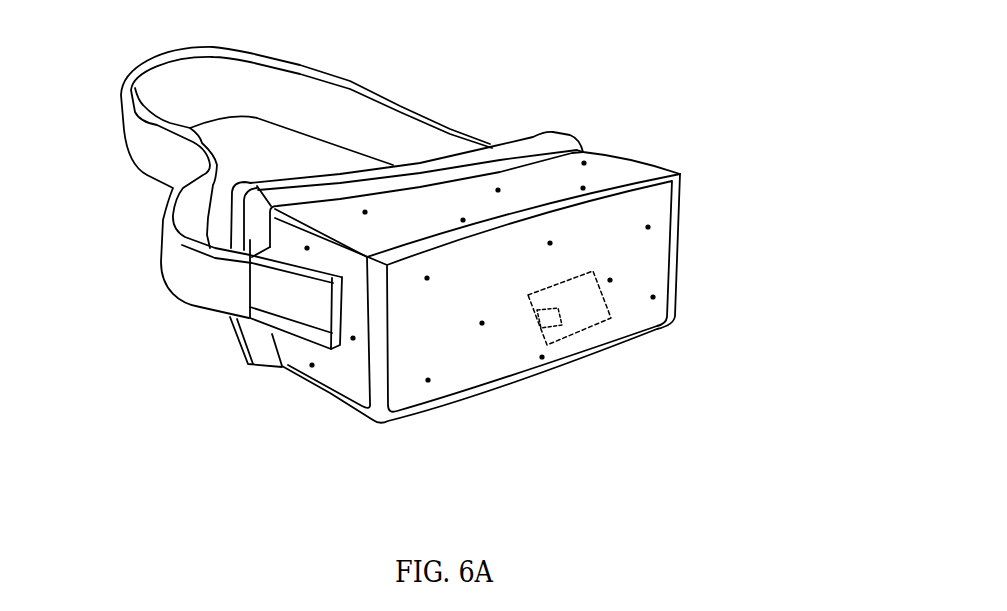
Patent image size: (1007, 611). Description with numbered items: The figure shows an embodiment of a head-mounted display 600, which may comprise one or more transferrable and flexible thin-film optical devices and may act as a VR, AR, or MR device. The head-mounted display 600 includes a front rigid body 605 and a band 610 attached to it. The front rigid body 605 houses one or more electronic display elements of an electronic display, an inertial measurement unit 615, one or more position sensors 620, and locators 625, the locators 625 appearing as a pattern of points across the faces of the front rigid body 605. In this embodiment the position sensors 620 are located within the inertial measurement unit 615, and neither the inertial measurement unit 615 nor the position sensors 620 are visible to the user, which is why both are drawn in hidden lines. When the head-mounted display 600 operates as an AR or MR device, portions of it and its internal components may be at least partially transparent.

The head-mounted display 600 is at (67, 50).
The front rigid body 605 is at (692, 172).
The band 610 is at (409, 104).
The inertial measurement unit 615 is at (611, 318).
The position sensors 620 is at (558, 311).
The locators 625 is at (653, 297).